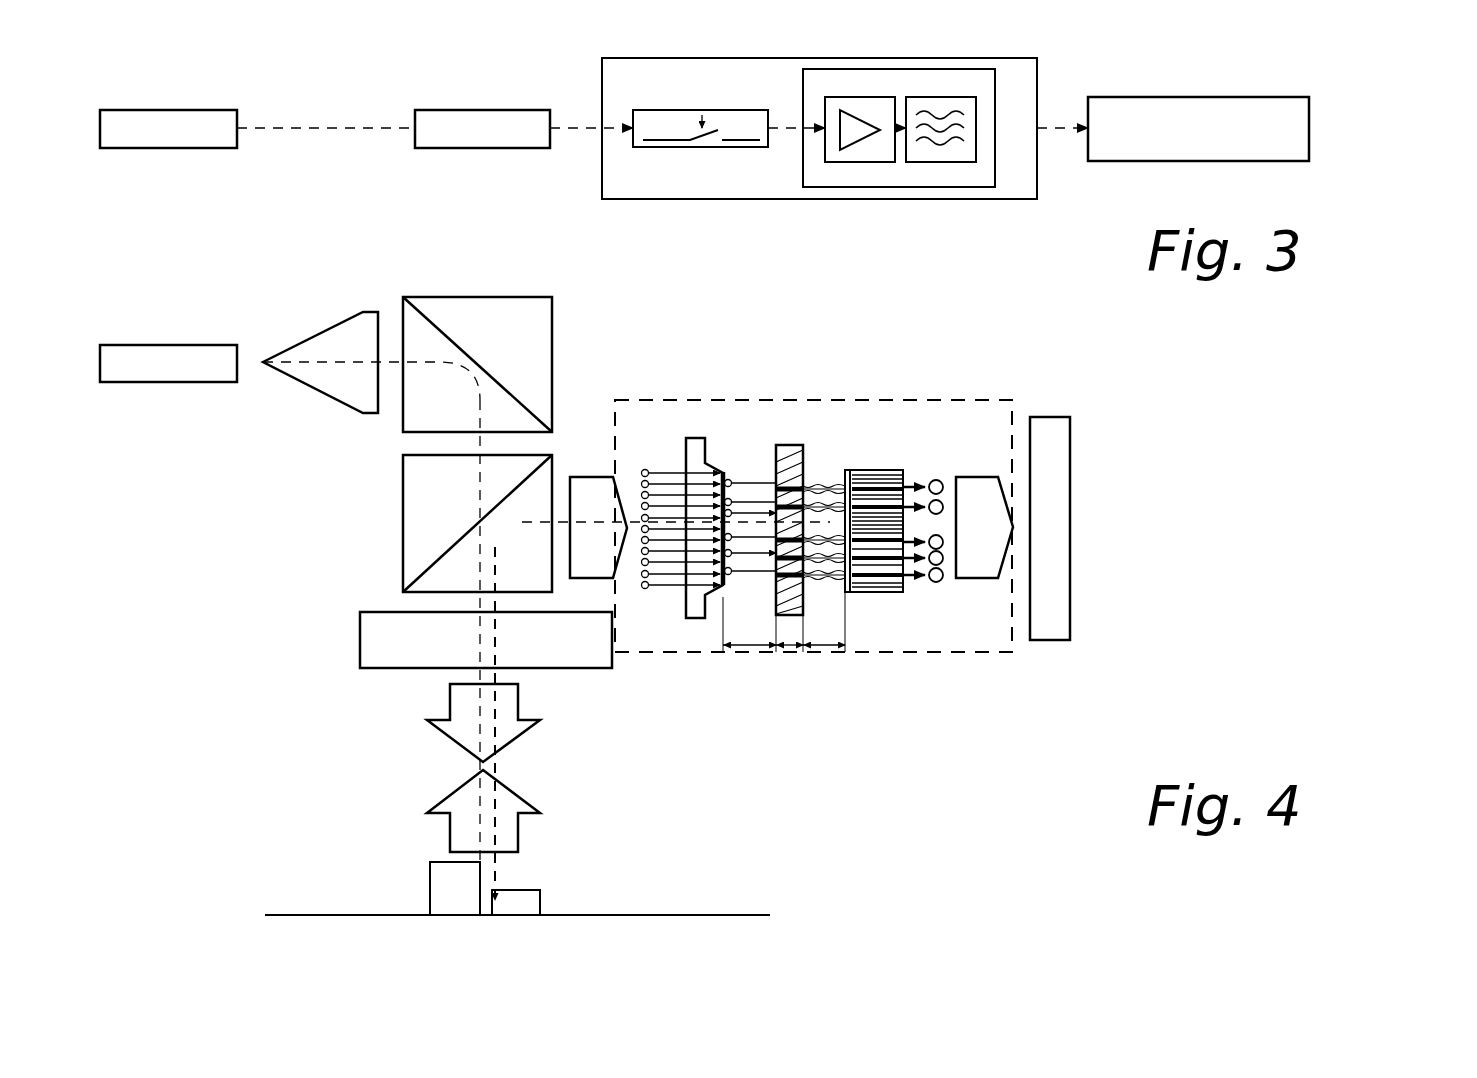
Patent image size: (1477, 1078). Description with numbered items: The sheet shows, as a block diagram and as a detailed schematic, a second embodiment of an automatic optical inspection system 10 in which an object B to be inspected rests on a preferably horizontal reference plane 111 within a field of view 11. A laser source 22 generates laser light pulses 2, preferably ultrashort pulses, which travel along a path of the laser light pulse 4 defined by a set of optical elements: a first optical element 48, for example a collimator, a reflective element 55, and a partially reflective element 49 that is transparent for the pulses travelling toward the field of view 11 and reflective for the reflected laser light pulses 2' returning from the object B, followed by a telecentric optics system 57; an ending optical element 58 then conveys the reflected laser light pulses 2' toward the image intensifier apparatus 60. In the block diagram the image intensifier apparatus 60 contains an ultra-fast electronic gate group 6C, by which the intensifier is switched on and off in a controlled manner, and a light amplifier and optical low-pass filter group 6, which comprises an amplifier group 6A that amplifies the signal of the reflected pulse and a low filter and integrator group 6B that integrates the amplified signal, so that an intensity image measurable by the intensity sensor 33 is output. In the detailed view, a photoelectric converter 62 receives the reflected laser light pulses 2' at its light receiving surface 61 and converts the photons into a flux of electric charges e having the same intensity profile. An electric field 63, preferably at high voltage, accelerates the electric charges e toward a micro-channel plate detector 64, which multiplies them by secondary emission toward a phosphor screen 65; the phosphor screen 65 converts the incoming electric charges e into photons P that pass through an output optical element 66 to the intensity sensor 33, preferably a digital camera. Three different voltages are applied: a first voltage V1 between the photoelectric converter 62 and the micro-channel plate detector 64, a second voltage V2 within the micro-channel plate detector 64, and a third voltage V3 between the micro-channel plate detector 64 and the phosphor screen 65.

In FIG. 3, the laser source 22 is at (165, 132).
In FIG. 4, the laser source 22 is at (158, 365).
In FIG. 3, the path of the laser light pulse 4 is at (497, 130).
In FIG. 4, the path of the laser light pulse 4 is at (322, 655).
In FIG. 3, the image intensifier apparatus 60 is at (760, 200).
In FIG. 4, the image intensifier apparatus 60 is at (960, 628).
In FIG. 3, the ultra-fast electronic gate group 6C is at (697, 150).
In FIG. 3, the light amplifier and optical low-pass filter group 6 is at (890, 190).
In FIG. 3, the amplifier group 6A is at (850, 156).
In FIG. 3, the low filter and integrator group 6B is at (950, 160).
In FIG. 3, the intensity sensor 33 is at (1195, 135).
In FIG. 4, the intensity sensor 33 is at (1047, 522).
In FIG. 3, the automatic optical inspection system 10 is at (1352, 118).
In FIG. 4, the automatic optical inspection system 10 is at (1195, 465).
In FIG. 4, the first optical element 48 is at (330, 338).
In FIG. 4, the reflective element 55 is at (495, 338).
In FIG. 4, the laser light pulses 2 is at (371, 416).
In FIG. 4, the partially reflective element 49 is at (440, 510).
In FIG. 4, the ending optical element 58 is at (592, 490).
In FIG. 4, the telecentric optics system 57 is at (380, 618).
In FIG. 4, the reflected laser light pulses 2' is at (544, 716).
In FIG. 4, the field of view 11 is at (400, 858).
In FIG. 4, the object B is at (438, 893).
In FIG. 4, the reference plane 111 is at (672, 915).
In FIG. 4, the light receiving surface 61 is at (712, 583).
In FIG. 4, the photoelectric converter 62 is at (733, 590).
In FIG. 4, the electric field 63 is at (754, 478).
In FIG. 4, the micro-channel plate detector 64 is at (790, 455).
In FIG. 4, the phosphor screen 65 is at (848, 470).
In FIG. 4, the output optical element 66 is at (978, 503).
In FIG. 4, the photons P is at (936, 478).
In FIG. 4, the electric charges e is at (728, 478).
In FIG. 4, the first voltage V1 is at (740, 650).
In FIG. 4, the second voltage V2 is at (790, 650).
In FIG. 4, the third voltage V3 is at (825, 650).